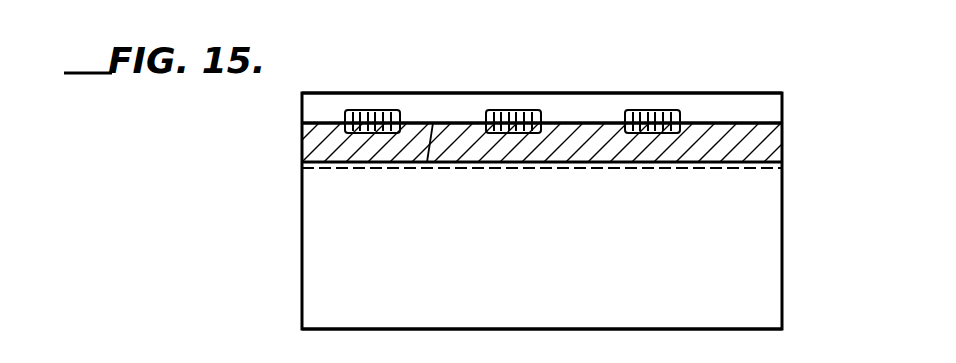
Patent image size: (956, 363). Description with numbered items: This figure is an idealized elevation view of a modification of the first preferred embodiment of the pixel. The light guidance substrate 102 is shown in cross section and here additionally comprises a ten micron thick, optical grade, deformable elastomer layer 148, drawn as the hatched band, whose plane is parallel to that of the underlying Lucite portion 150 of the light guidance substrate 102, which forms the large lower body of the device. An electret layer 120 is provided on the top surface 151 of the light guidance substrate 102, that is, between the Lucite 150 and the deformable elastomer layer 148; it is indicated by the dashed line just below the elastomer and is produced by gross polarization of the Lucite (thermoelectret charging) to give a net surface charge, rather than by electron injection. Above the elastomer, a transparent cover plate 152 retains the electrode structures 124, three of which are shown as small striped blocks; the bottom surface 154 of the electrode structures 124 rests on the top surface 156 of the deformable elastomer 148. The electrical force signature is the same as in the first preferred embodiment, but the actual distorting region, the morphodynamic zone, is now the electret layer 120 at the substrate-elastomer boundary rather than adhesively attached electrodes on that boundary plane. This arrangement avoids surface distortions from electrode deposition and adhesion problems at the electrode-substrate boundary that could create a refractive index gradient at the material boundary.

The light guidance substrate 102 is at (290, 229).
The electret layer 120 is at (747, 170).
The electrode structures 124 is at (364, 110).
The deformable elastomer layer 148 is at (300, 136).
The Lucite portion 150 is at (540, 281).
The top surface 151 is at (793, 170).
The transparent cover plate 152 is at (757, 93).
The bottom surface 154 is at (433, 122).
The top surface 156 is at (427, 162).